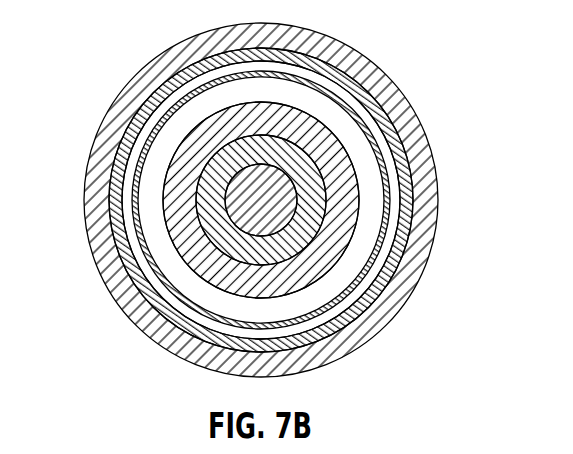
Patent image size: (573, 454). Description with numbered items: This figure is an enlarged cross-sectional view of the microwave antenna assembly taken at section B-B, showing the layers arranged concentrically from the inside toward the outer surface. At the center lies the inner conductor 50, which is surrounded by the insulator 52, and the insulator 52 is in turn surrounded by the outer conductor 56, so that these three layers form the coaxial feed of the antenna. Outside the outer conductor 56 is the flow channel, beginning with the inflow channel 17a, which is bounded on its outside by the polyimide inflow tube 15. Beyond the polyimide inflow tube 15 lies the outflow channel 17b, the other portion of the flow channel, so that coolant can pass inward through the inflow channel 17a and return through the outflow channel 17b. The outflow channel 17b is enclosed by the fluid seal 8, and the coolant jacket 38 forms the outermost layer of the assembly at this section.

The coolant jacket 38 is at (398, 300).
The fluid seal 8 is at (400, 262).
The outflow channel 17b is at (396, 220).
The polyimide inflow tube 15 is at (388, 183).
The inflow channel 17a is at (367, 153).
The outer conductor 56 is at (190, 252).
The insulator 52 is at (200, 221).
The inner conductor 50 is at (230, 208).